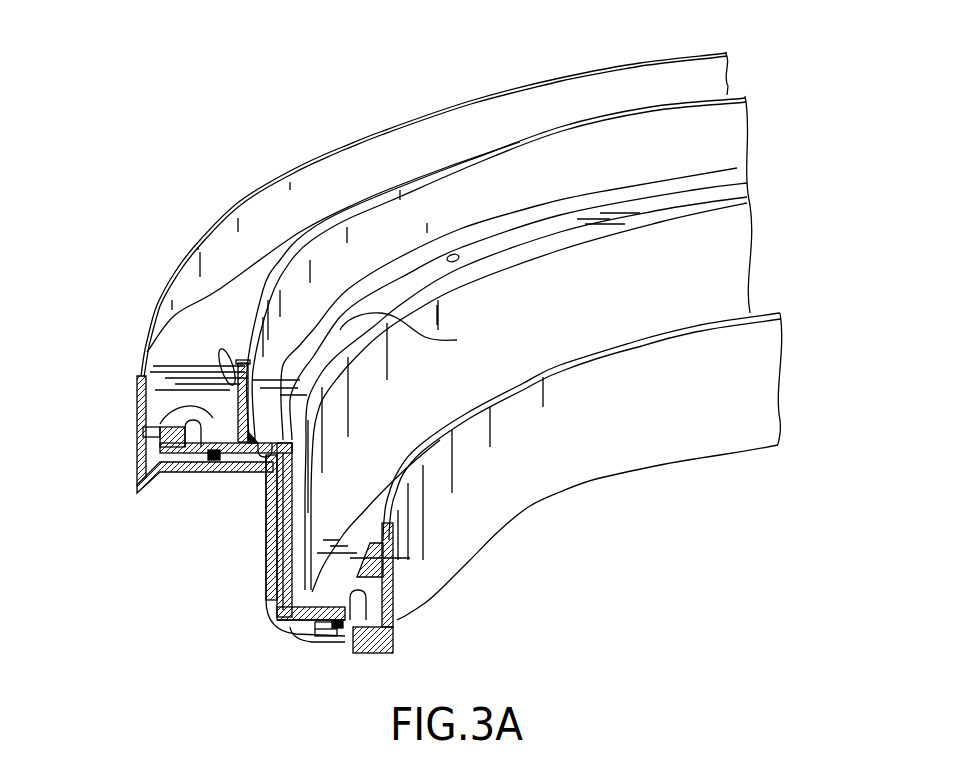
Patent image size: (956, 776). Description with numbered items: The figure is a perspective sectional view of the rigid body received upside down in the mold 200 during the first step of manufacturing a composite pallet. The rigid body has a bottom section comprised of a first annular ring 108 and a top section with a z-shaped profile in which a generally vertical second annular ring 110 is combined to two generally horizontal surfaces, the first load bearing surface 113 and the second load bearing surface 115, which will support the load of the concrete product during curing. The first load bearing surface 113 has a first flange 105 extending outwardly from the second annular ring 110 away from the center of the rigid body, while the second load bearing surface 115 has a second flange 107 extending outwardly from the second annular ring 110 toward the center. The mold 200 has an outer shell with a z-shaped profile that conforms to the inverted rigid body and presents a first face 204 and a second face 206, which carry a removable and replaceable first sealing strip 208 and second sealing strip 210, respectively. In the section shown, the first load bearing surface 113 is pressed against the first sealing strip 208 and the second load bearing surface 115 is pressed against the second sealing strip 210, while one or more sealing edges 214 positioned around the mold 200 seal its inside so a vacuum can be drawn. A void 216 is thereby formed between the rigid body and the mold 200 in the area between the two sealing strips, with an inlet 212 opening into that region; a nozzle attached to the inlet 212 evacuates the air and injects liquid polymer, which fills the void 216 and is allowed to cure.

The mold 200 is at (142, 298).
The sealing edge 214 is at (160, 398).
The first flange 105 is at (160, 427).
The first face 204 is at (160, 460).
The first sealing strip 208 is at (212, 452).
The second annular ring 110 is at (285, 497).
The void 216 is at (280, 543).
The second face 206 is at (308, 633).
The inlet 212 is at (327, 637).
The second sealing strip 210 is at (343, 627).
The second flange 107 is at (370, 587).
The second load bearing surface 115 is at (330, 557).
The first load bearing surface 113 is at (420, 333).
The first annular ring 108 is at (417, 227).